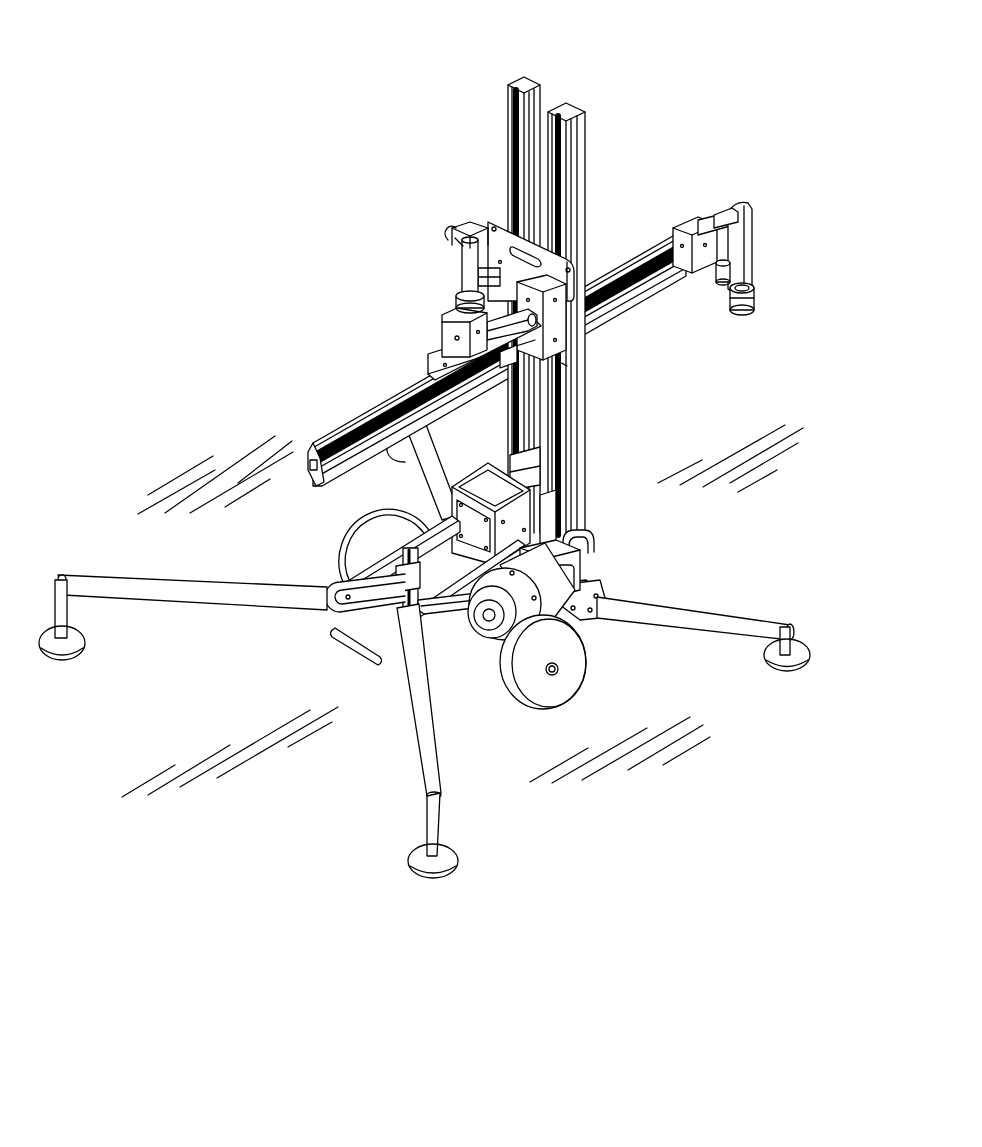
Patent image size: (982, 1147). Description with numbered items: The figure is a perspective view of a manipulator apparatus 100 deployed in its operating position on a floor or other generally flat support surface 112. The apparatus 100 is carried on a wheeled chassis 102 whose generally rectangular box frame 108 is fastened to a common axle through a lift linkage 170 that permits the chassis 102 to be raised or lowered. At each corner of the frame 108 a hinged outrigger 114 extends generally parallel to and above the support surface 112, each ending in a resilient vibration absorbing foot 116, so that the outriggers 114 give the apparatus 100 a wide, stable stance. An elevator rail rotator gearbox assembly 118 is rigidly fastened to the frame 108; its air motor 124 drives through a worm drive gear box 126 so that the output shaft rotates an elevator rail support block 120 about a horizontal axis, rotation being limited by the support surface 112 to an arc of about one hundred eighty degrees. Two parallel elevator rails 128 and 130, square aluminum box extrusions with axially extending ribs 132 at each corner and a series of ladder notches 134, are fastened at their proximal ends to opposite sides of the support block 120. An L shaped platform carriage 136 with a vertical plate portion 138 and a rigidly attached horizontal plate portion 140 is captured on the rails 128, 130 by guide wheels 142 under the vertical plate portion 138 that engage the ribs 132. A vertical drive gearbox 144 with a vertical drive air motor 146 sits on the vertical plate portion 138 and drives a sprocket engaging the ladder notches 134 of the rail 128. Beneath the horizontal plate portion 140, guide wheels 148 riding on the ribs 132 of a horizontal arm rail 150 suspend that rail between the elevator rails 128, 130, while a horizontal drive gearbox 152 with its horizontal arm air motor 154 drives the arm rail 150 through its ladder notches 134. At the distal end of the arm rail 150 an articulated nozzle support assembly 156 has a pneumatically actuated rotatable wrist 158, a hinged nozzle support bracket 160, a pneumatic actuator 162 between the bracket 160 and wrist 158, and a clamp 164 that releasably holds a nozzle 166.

The manipulator apparatus 100 is at (337, 129).
The wheeled chassis 102 is at (402, 516).
The rectangular box frame 108 is at (352, 557).
The support surface 112 is at (751, 555).
The hinged outrigger 114 is at (158, 576).
The resilient vibration absorbing foot 116 is at (85, 648).
The elevator rail rotator gearbox assembly 118 is at (600, 500).
The elevator rail support block 120 is at (552, 468).
The air motor 124 is at (488, 640).
The worm drive gear box 126 is at (468, 462).
The elevator rail 128 is at (568, 108).
The elevator rail 130 is at (528, 86).
The axially extending ribs 132 is at (510, 85).
The ladder notches 134 is at (555, 157).
The L shaped platform carriage 136 is at (596, 268).
The vertical plate portion 138 is at (590, 340).
The horizontal plate portion 140 is at (430, 342).
The guide wheels 142 is at (498, 216).
The vertical drive gearbox 144 is at (568, 358).
The vertical drive air motor 146 is at (530, 350).
The guide wheels 148 is at (425, 385).
The horizontal arm rail 150 is at (320, 442).
The horizontal drive gearbox 152 is at (442, 312).
The horizontal arm air motor 154 is at (462, 282).
The articulated nozzle support assembly 156 is at (758, 223).
The pneumatically actuated rotatable wrist 158 is at (692, 225).
The hinged nozzle support bracket 160 is at (746, 246).
The pneumatic actuator 162 is at (723, 285).
The clamp 164 is at (753, 287).
The nozzle 166 is at (752, 312).
The lift linkage 170 is at (333, 644).